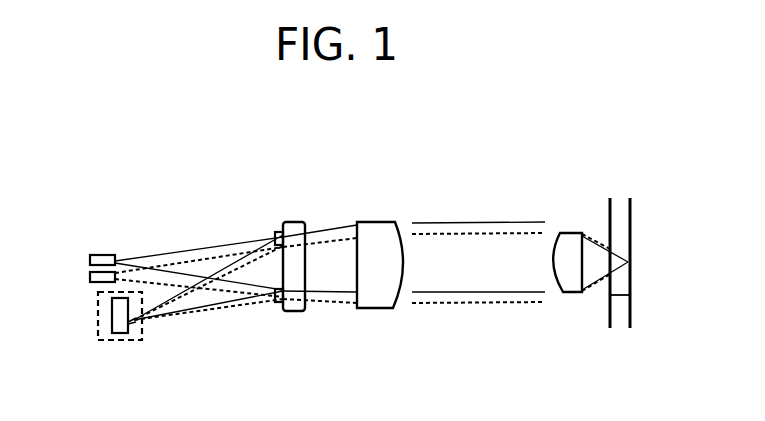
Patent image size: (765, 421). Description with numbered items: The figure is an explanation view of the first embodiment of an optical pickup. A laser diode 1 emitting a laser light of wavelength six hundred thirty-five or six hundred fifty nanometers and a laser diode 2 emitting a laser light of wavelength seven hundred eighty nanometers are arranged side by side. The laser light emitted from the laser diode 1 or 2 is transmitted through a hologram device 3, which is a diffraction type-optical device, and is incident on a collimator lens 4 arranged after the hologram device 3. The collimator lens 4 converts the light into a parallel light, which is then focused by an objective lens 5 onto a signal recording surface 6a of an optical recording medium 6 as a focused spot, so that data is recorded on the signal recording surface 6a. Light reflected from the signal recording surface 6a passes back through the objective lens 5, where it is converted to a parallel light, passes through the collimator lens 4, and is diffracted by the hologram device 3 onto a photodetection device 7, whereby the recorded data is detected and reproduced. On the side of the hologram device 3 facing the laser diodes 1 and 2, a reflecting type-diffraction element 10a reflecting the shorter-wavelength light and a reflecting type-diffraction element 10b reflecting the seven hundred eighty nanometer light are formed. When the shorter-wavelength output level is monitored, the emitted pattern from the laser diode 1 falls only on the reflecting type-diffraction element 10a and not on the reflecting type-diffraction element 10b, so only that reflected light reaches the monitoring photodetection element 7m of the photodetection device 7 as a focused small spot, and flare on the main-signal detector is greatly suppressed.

The laser diode 1 is at (100, 255).
The laser diode 2 is at (100, 283).
The hologram device 3 is at (298, 222).
The collimator lens 4 is at (372, 222).
The objective lens 5 is at (572, 232).
The optical recording medium 6 is at (623, 196).
The signal recording surface 6a is at (610, 297).
The photodetection device 7 is at (110, 341).
The monitoring photodetection element 7m is at (130, 323).
The reflecting type-diffraction element 10a is at (274, 235).
The reflecting type-diffraction element 10b is at (274, 303).